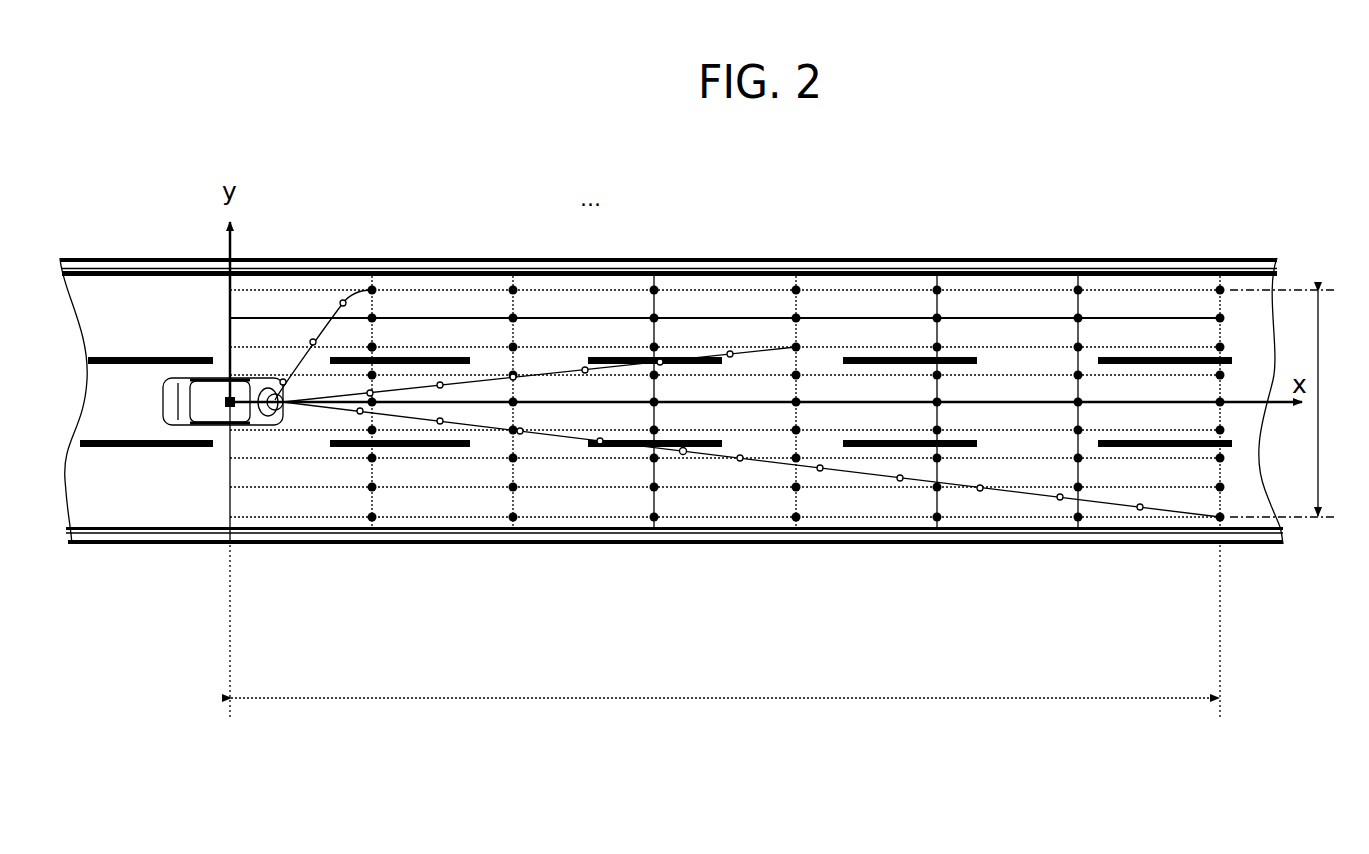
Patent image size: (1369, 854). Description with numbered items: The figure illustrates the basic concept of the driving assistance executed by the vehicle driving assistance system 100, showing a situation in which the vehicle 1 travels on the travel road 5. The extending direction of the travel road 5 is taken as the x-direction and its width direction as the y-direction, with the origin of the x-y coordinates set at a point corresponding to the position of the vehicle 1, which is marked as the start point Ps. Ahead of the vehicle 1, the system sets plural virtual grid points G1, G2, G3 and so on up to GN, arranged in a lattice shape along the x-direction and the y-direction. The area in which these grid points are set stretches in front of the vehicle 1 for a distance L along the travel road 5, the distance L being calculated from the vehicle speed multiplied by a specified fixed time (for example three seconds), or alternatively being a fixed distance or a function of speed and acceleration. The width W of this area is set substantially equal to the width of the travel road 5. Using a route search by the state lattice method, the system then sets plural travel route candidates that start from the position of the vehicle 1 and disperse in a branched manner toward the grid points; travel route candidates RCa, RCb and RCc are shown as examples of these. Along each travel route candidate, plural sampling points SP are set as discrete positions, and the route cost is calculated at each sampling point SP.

The vehicle 1 is at (185, 370).
The vehicle driving assistance system 100 is at (268, 432).
The travel road 5 is at (436, 540).
The start point (vehicle position) Ps is at (213, 405).
The travel route candidate RCa is at (330, 312).
The travel route candidate RCb is at (700, 352).
The travel route candidate RCc is at (838, 470).
The sampling point SP is at (688, 465).
The grid point G1 is at (372, 290).
The grid point G2 is at (372, 347).
The grid point G3 is at (373, 347).
The grid point GN is at (1220, 517).
The distance L is at (725, 630).
The width W is at (1289, 403).